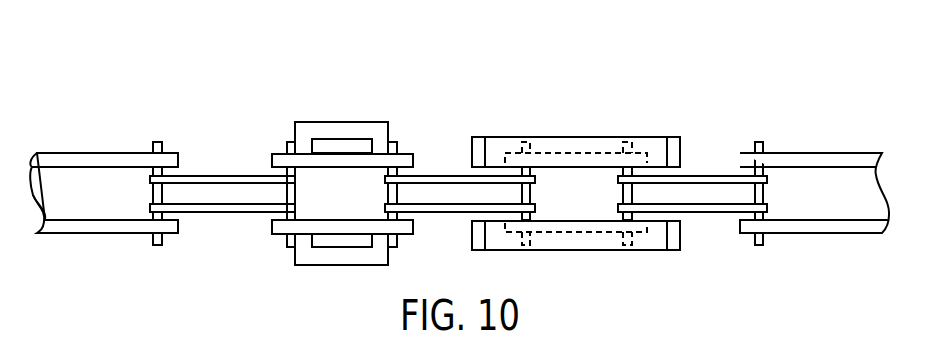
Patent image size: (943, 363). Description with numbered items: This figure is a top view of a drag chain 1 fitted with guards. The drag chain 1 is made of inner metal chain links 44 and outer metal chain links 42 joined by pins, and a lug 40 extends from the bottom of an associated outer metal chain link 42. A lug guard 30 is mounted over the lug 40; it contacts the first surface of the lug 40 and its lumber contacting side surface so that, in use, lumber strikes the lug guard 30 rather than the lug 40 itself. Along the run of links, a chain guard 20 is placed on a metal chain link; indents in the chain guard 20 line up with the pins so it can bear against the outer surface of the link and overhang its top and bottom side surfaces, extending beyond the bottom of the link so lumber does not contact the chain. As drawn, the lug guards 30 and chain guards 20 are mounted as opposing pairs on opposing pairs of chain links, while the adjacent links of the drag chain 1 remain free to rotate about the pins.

The drag chain 1 is at (231, 101).
The chain guard 20 is at (578, 136).
The lug guard 30 is at (342, 165).
The lug 40 is at (342, 147).
The outer metal chain link 42 is at (367, 169).
The inner metal chain link 44 is at (437, 173).